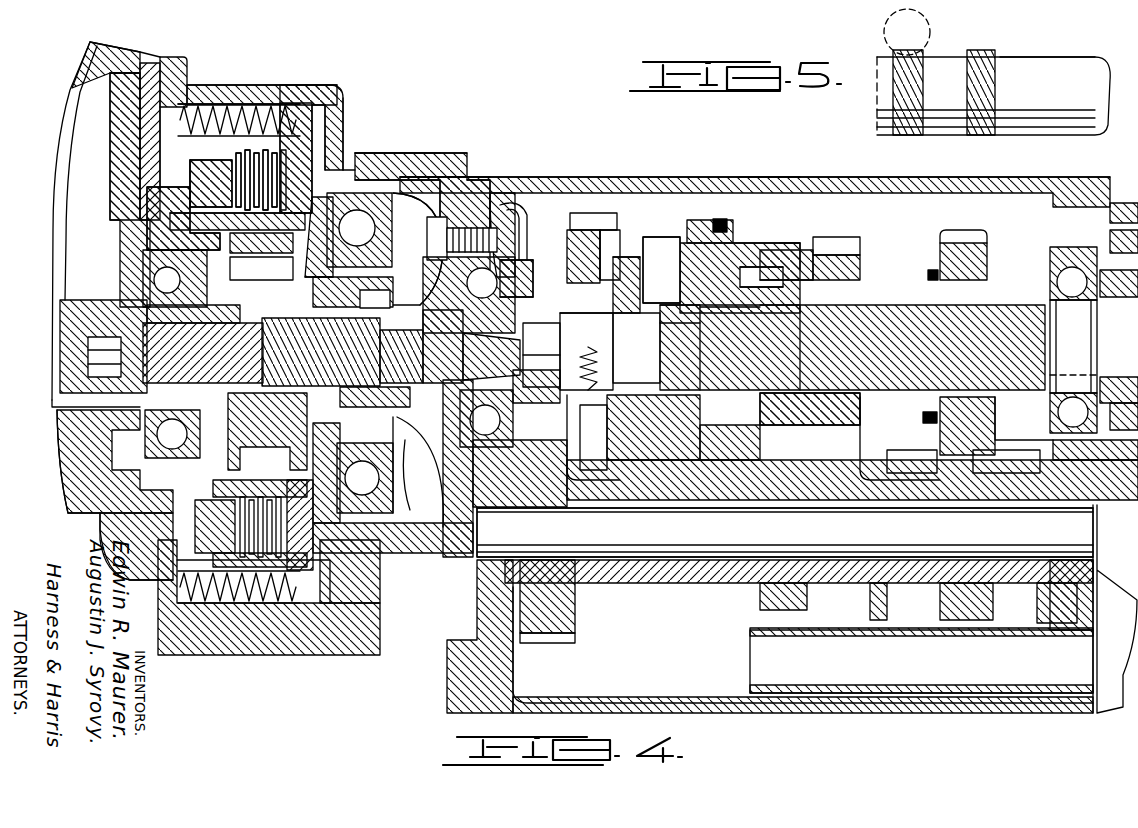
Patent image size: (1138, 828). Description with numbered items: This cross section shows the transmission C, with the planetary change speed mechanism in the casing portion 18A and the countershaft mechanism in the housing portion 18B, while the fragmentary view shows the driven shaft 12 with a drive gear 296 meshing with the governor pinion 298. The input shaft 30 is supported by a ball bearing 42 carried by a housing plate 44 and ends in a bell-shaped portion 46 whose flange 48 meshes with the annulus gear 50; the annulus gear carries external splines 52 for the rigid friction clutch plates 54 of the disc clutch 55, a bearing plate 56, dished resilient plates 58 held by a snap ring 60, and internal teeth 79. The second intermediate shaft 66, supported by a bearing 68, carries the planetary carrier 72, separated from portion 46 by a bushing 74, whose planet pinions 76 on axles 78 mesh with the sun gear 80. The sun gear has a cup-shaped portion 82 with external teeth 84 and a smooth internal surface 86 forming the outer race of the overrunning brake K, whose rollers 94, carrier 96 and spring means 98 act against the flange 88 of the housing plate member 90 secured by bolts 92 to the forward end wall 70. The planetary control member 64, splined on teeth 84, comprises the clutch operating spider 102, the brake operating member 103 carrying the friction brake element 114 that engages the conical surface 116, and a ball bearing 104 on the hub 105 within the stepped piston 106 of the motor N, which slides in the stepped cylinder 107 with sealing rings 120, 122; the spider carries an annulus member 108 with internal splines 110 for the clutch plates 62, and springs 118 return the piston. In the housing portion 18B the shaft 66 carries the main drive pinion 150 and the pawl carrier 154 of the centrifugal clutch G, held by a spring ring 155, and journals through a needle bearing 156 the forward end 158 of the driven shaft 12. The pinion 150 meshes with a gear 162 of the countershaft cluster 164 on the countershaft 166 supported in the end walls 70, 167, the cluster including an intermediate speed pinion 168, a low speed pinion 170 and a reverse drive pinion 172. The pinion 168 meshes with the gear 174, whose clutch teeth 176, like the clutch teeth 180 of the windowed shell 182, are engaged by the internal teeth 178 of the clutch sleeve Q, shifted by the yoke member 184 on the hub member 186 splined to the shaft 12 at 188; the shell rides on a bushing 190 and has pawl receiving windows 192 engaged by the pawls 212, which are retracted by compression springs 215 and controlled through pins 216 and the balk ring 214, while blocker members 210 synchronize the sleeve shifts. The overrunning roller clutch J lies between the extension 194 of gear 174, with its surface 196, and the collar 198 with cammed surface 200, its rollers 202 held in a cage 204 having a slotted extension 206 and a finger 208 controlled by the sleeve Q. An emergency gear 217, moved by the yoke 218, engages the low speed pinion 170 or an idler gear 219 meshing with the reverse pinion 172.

In FIG. 4, the transmission driven shaft 12 is at (1082, 356).
In FIG. 5, the transmission driven shaft 12 is at (1055, 92).
In FIG. 4, the casing portion 18A is at (320, 85).
In FIG. 4, the housing portion 18B is at (575, 177).
In FIG. 4, the shaft 30 is at (65, 355).
In FIG. 4, the ball bearing 42 is at (140, 260).
In FIG. 4, the housing plate 44 is at (187, 177).
In FIG. 4, the bell-shaped end portion 46 is at (147, 293).
In FIG. 4, the radially extending flange 48 is at (187, 238).
In FIG. 4, the annulus gear 50 is at (190, 212).
In FIG. 4, the external teeth or splines 52 is at (183, 201).
In FIG. 4, the rigid friction clutch plates 54 is at (345, 160).
In FIG. 4, the disc clutch 55 is at (247, 150).
In FIG. 4, the rigid bearing plate 56 is at (201, 103).
In FIG. 4, the dished resilient plates 58 is at (187, 163).
In FIG. 4, the snap ring 60 is at (183, 197).
In FIG. 4, the friction clutch plates 62 is at (257, 153).
In FIG. 4, the planetary control or throwout member 64 is at (373, 152).
In FIG. 4, the second intermediate transmission shaft 66 is at (232, 361).
In FIG. 4, the bearing 68 is at (520, 218).
In FIG. 4, the forward end wall 70 is at (483, 590).
In FIG. 4, the planetary carrier or spider member 72 is at (267, 431).
In FIG. 4, the bushing 74 is at (150, 420).
In FIG. 4, the planet pinions 76 is at (307, 207).
In FIG. 4, the axles 78 is at (261, 257).
In FIG. 4, the internal teeth 79 is at (254, 480).
In FIG. 4, the sun gear 80 is at (312, 290).
In FIG. 4, the cup-shaped portion 82 is at (320, 463).
In FIG. 4, the external splines or teeth 84 is at (362, 443).
In FIG. 4, the smooth internal surface 86 is at (388, 252).
In FIG. 4, the axially extending flange 88 is at (460, 430).
In FIG. 4, the housing plate member 90 is at (443, 527).
In FIG. 4, the bolts 92 is at (491, 190).
In FIG. 4, the rollers 94 is at (409, 465).
In FIG. 4, the carrier 96 is at (400, 290).
In FIG. 4, the spring means 98 is at (475, 308).
In FIG. 4, the clutch operating spider 102 is at (383, 168).
In FIG. 4, the brake operating member 103 is at (460, 182).
In FIG. 4, the ball bearing 104 is at (370, 236).
In FIG. 4, the hub 105 is at (392, 224).
In FIG. 4, the stepped piston 106 is at (344, 108).
In FIG. 4, the stepped cylinder 107 is at (350, 115).
In FIG. 4, the annulus member 108 is at (275, 153).
In FIG. 4, the internal splines 110 is at (266, 150).
In FIG. 4, the friction brake element 114 is at (440, 157).
In FIG. 4, the complementary inner peripheral surface 116 is at (446, 168).
In FIG. 4, the springs 118 is at (233, 103).
In FIG. 4, the sealing ring 120 is at (330, 100).
In FIG. 4, the sealing ring 122 is at (390, 160).
In FIG. 4, the main drive pinion 150 is at (521, 242).
In FIG. 4, the pawl carrying member or core 154 is at (523, 258).
In FIG. 4, the spring ring 155 is at (567, 263).
In FIG. 4, the needle bearing 156 is at (541, 355).
In FIG. 4, the forward end 158 is at (541, 361).
In FIG. 4, the gear 162 is at (550, 643).
In FIG. 4, the countershaft cluster 164 is at (717, 583).
In FIG. 4, the countershaft 166 is at (806, 535).
In FIG. 4, the end wall 167 is at (1088, 585).
In FIG. 4, the intermediate speed pinion 168 is at (810, 607).
In FIG. 4, the low speed pinion 170 is at (927, 613).
In FIG. 4, the reverse drive pinion 172 is at (1033, 590).
In FIG. 4, the gear 174 is at (835, 240).
In FIG. 4, the external clutch or drive control teeth 176 is at (758, 252).
In FIG. 4, the internal teeth 178 is at (742, 243).
In FIG. 4, the external clutch or drive control teeth 180 is at (655, 237).
In FIG. 4, the windowed shell 182 is at (614, 235).
In FIG. 4, the yoke member 184 is at (733, 200).
In FIG. 4, the splined hub member 186 is at (676, 500).
In FIG. 4, the spline connection 188 is at (686, 347).
In FIG. 4, the bushing 190 is at (636, 348).
In FIG. 4, the pawl receiving windows 192 is at (587, 232).
In FIG. 4, the enlarged forwardly extending portion 194 is at (774, 273).
In FIG. 4, the smooth annular bore or surface 196 is at (762, 265).
In FIG. 4, the collar 198 is at (777, 313).
In FIG. 4, the cammed surface 200 is at (852, 347).
In FIG. 4, the rollers 202 is at (790, 420).
In FIG. 4, the cage 204 is at (703, 326).
In FIG. 4, the rearward slotted annular extension 206 is at (805, 455).
In FIG. 4, the radially extending finger 208 is at (714, 220).
In FIG. 4, the toothed blocker synchronizing member 210 is at (780, 243).
In FIG. 4, the pawls 212 is at (625, 212).
In FIG. 4, the balk ring 214 is at (624, 260).
In FIG. 4, the compression springs 215 is at (598, 362).
In FIG. 4, the pins or projections 216 is at (586, 351).
In FIG. 4, the slidable gear 217 is at (966, 232).
In FIG. 4, the yoke 218 is at (930, 273).
In FIG. 4, the idler gear 219 is at (1035, 440).
In FIG. 5, the worm gear 296 is at (928, 60).
In FIG. 5, the governor pinion 298 is at (925, 20).
In FIG. 4, the fluid pressure operated motor N is at (297, 215).
In FIG. 4, the transmission C is at (437, 137).
In FIG. 4, the centrifugal type pawl clutch G is at (600, 213).
In FIG. 4, the manually shiftable clutch sleeve Q is at (703, 217).
In FIG. 4, the overrunning brake mechanism K is at (428, 243).
In FIG. 4, the overrunning roller clutch J is at (792, 247).